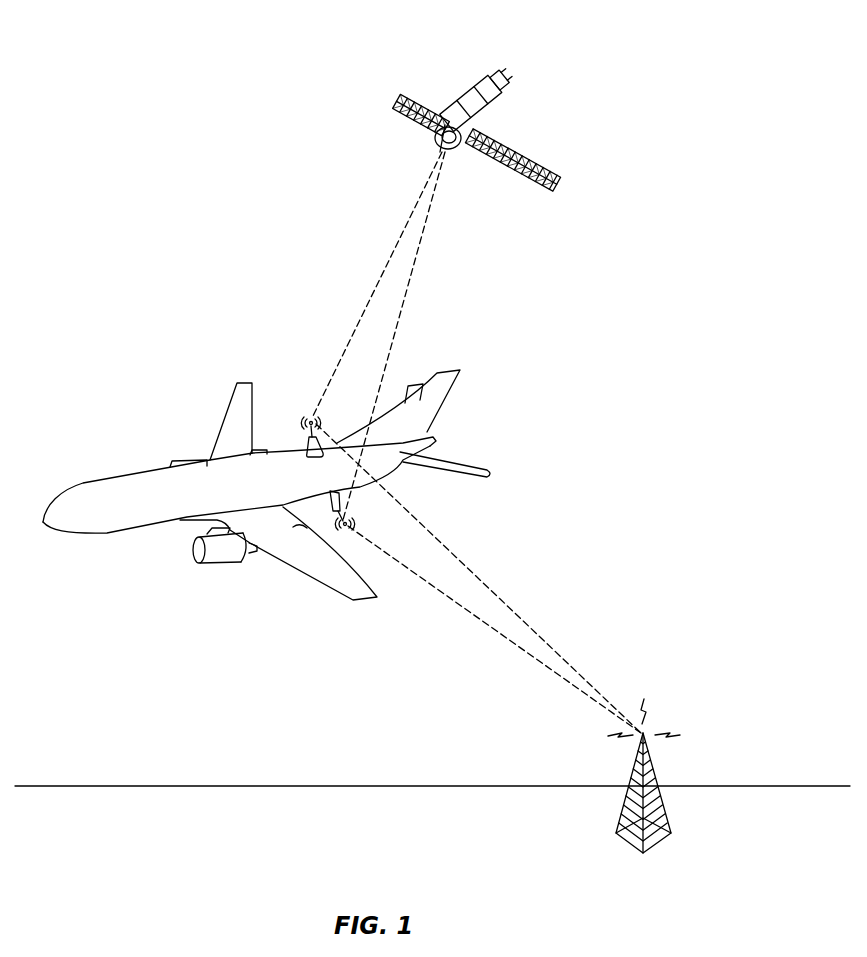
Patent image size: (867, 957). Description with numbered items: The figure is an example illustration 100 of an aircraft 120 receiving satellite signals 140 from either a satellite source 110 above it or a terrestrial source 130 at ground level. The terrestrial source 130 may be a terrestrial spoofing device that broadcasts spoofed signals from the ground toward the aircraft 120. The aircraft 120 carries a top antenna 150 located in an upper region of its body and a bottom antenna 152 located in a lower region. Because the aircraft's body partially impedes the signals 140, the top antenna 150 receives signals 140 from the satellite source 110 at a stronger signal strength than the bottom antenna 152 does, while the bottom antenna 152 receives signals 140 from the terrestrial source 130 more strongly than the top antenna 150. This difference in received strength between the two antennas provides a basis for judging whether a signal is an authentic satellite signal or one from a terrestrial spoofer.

The example illustration 100 is at (182, 54).
The satellite source 110 is at (499, 82).
The aircraft 120 is at (74, 492).
The terrestrial source 130 is at (655, 765).
The satellite signals 140 is at (416, 250).
The top antenna 150 is at (305, 457).
The bottom antenna 152 is at (342, 498).